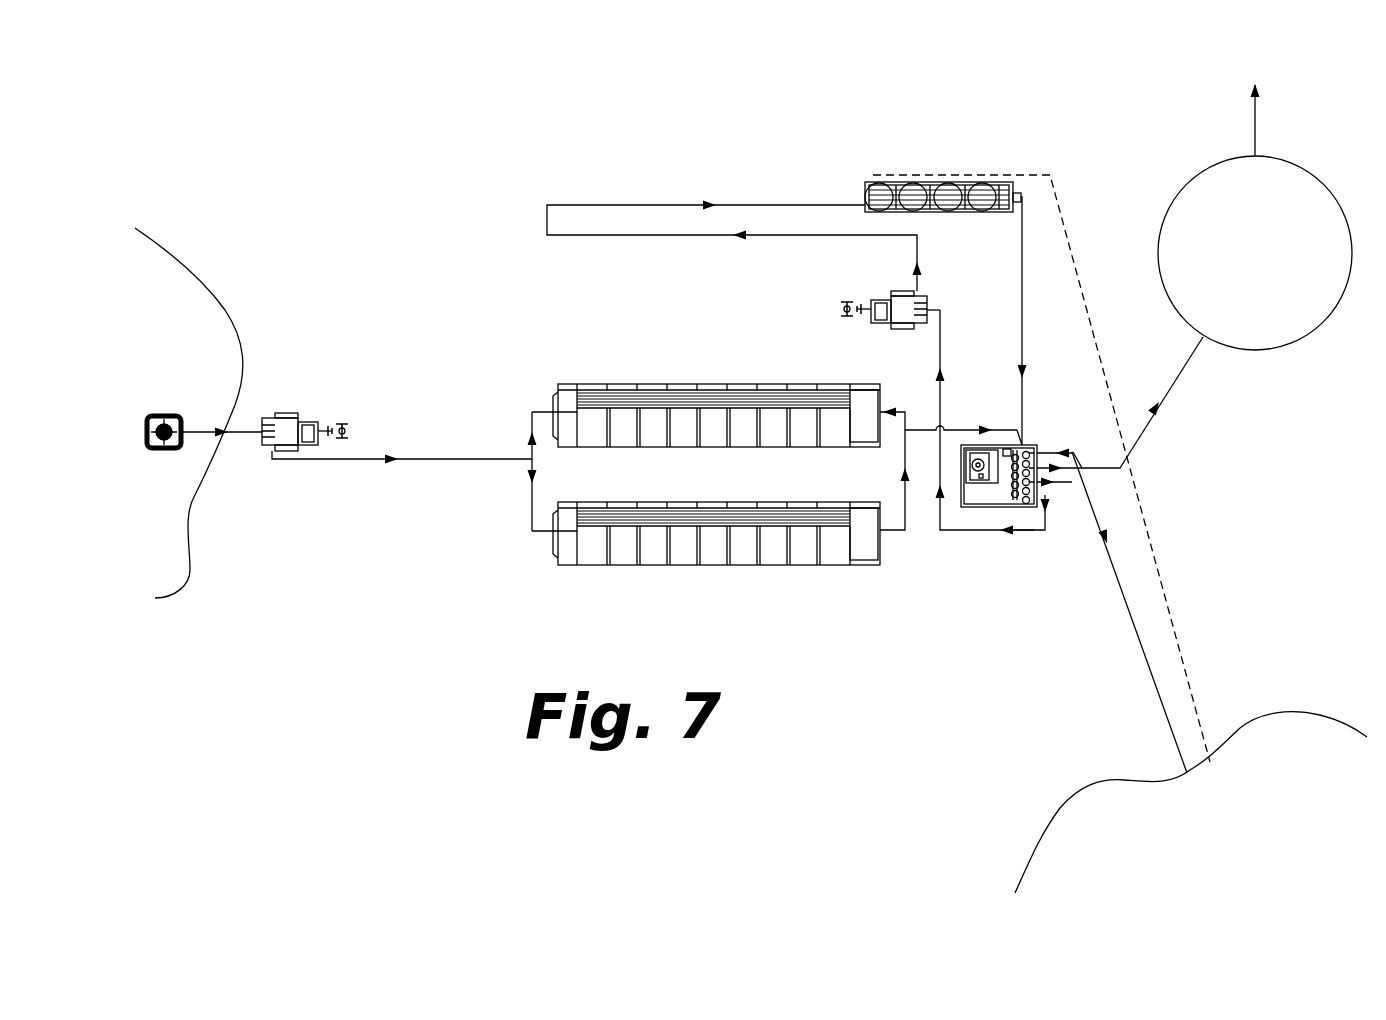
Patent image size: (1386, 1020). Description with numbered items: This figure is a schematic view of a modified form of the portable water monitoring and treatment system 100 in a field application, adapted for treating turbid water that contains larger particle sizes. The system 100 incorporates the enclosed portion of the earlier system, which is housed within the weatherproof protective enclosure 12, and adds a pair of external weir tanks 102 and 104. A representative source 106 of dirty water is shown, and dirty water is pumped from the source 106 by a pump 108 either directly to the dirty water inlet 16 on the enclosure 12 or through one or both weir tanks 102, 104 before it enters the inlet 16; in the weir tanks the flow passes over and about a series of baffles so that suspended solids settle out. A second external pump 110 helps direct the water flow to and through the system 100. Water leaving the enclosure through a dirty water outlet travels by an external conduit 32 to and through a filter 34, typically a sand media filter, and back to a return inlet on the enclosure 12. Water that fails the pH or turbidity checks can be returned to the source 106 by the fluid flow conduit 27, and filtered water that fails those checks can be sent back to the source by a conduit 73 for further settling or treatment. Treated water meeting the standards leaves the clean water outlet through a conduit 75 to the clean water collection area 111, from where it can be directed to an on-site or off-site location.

The weatherproof protective enclosure 12 is at (1022, 446).
The dirty water inlet 16 is at (1022, 447).
The fluid flow conduit 27 is at (1072, 486).
The external conduit 32 is at (1022, 532).
The filter 34 is at (866, 190).
The conduit 73 is at (1073, 452).
The conduit 75 is at (1188, 360).
The system 100 is at (972, 380).
The weir tank 102 is at (558, 384).
The weir tank 104 is at (592, 565).
The source of dirty water 106 is at (143, 267).
The pump 108 is at (275, 412).
The pump 110 is at (878, 300).
The clean water collection area 111 is at (1198, 197).